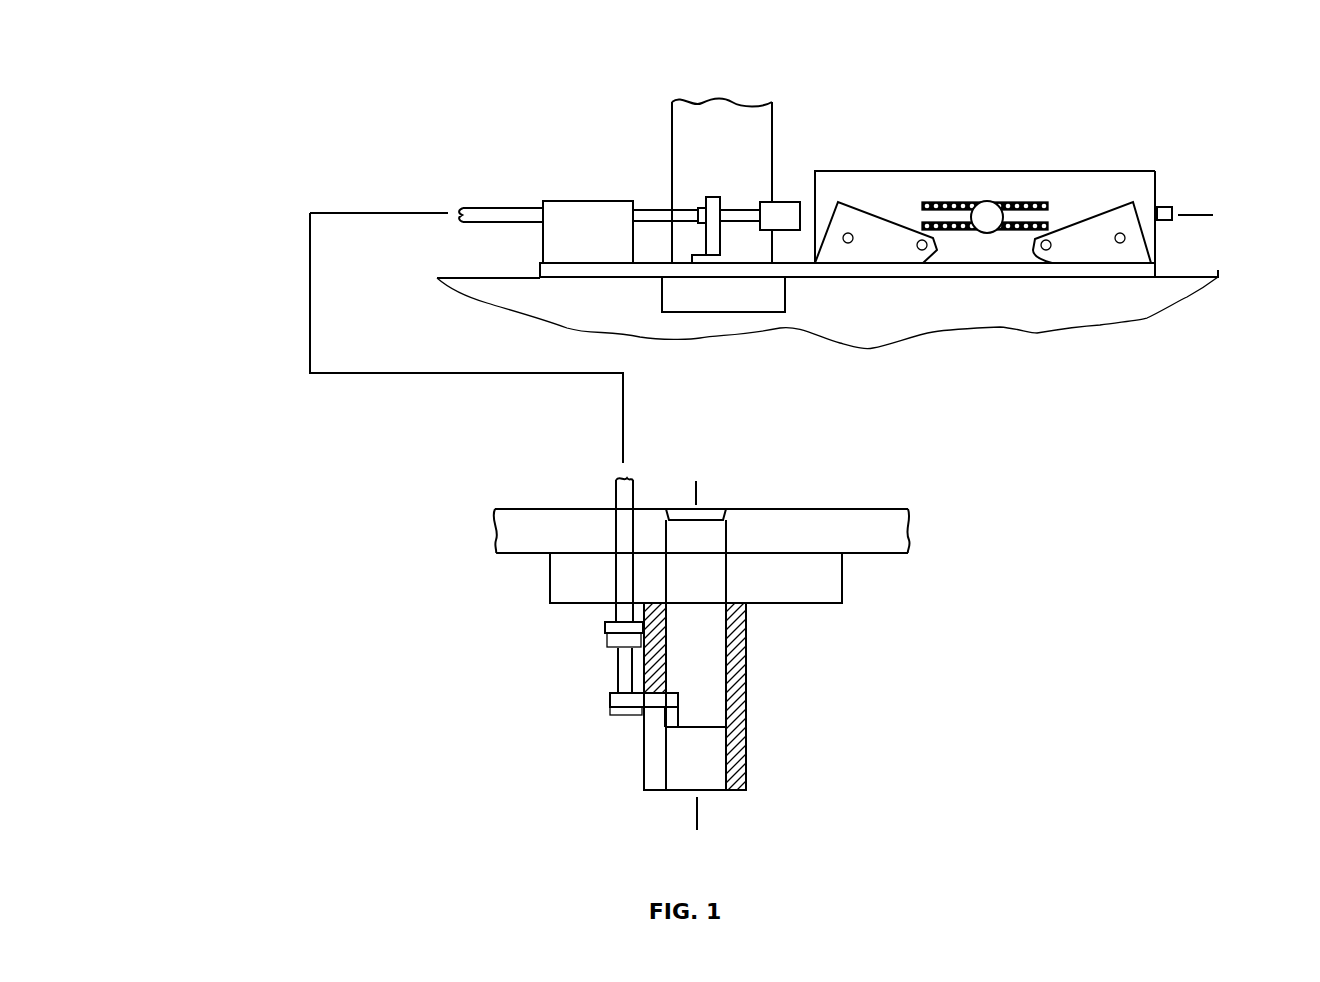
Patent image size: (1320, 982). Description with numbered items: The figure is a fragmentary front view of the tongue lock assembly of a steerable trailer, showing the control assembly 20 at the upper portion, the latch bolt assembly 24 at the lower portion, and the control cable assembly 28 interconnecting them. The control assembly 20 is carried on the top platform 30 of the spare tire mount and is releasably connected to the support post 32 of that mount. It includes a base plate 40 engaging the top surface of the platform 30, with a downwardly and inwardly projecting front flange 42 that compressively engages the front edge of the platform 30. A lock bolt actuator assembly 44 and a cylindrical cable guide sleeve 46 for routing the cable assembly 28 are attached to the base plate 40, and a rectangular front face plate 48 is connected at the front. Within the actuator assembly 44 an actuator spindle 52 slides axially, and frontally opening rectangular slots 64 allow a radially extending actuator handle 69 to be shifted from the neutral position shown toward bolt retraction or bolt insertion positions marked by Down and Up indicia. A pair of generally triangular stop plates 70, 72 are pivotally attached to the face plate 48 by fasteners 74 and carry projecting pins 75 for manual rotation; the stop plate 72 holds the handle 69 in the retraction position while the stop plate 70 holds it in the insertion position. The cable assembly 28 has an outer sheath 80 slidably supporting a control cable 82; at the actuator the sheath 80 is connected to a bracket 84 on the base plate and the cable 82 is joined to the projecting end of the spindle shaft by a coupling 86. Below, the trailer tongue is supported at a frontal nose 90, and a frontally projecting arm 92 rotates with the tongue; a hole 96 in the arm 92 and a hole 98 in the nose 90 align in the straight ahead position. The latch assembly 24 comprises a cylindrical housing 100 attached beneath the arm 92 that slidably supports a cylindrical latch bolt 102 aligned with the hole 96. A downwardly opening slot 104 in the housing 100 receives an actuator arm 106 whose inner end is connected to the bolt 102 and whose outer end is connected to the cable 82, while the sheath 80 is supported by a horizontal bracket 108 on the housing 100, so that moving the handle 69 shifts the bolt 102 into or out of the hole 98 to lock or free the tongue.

The control assembly 20 is at (1205, 105).
The latch bolt assembly 24 is at (866, 700).
The control cable assembly 28 is at (310, 282).
The platform 30 is at (467, 292).
The support post 32 is at (683, 130).
The base plate 40 is at (1143, 270).
The front flange 42 is at (743, 295).
The lock bolt actuator assembly 44 is at (940, 168).
The cable guide sleeve 46 is at (580, 198).
The front face plate 48 is at (1155, 178).
The actuator spindle 52 is at (1167, 220).
The rectangular slots 64 is at (1018, 202).
The actuator handle 69 is at (985, 200).
The stop plate 70 is at (875, 227).
The stop plate 72 is at (1100, 235).
The fasteners 74 is at (923, 250).
The projecting pins 75 is at (850, 243).
The outer sheath 80 is at (477, 212).
The control cable 82 is at (743, 213).
The bracket 84 is at (698, 258).
The coupling 86 is at (785, 230).
The nose 90 is at (842, 523).
The arm 92 is at (827, 580).
The hole 96 is at (727, 587).
The hole 98 is at (728, 537).
The cylindrical housing 100 is at (740, 745).
The latch bolt 102 is at (713, 675).
The slot 104 is at (653, 760).
The actuator arm 106 is at (610, 698).
The horizontal bracket 108 is at (603, 638).